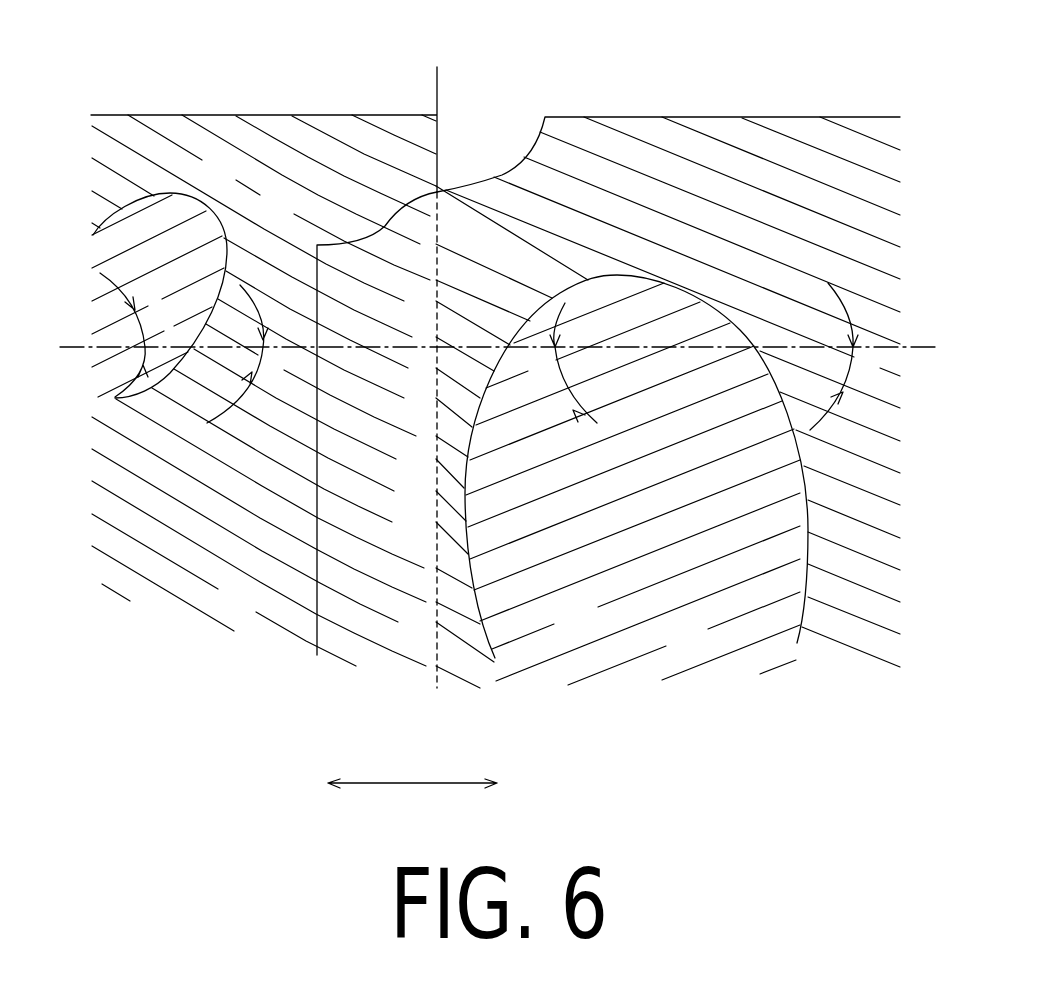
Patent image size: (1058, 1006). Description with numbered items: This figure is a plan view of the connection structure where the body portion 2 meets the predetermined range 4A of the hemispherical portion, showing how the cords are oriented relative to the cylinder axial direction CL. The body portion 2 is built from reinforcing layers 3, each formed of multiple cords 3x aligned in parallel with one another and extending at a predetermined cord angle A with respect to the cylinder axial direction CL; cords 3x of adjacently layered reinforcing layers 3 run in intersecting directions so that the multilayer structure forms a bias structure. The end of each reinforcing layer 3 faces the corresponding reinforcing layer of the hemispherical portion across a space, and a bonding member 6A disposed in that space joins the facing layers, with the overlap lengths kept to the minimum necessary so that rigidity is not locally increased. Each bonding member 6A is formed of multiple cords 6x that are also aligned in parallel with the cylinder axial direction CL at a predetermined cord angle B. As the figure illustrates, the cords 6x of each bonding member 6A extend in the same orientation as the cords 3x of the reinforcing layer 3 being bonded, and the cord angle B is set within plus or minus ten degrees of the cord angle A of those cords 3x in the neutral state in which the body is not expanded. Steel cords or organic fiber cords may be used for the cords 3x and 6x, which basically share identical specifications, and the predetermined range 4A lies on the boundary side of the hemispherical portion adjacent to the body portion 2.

The body portion 2 is at (317, 110).
The reinforcing layer 3 is at (629, 615).
The cord 3x is at (840, 478).
The predetermined range 4A is at (437, 77).
The bonding member 6A is at (88, 391).
The cord 6x is at (185, 242).
The cord angle A is at (703, 356).
The cord angle B is at (190, 348).
The cylinder axial direction CL is at (918, 347).